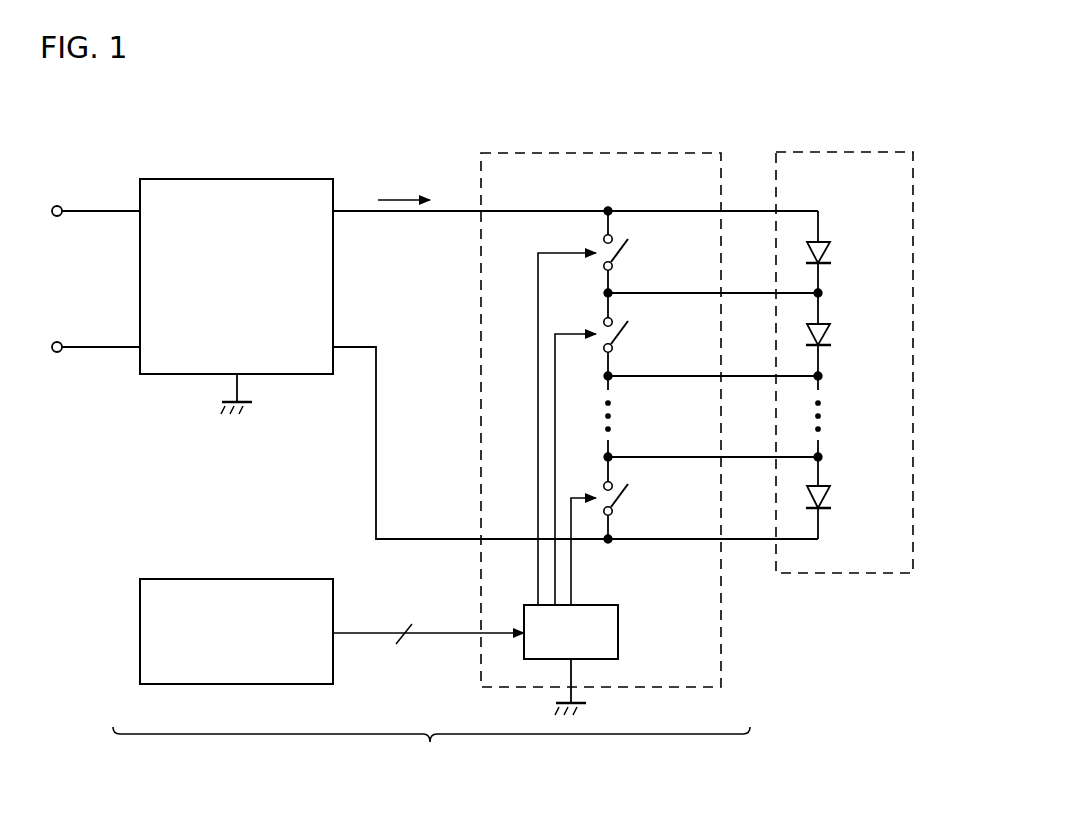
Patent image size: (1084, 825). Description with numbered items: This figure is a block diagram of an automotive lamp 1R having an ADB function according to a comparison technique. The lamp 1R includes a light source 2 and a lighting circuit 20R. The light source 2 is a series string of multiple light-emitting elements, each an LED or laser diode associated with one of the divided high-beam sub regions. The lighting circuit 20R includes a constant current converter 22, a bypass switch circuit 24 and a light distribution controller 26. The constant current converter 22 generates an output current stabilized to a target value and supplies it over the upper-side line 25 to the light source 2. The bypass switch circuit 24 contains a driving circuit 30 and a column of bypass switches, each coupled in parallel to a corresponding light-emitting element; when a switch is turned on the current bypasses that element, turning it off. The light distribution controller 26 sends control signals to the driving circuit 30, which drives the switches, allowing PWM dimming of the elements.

The automotive lamp 1R is at (853, 131).
The light source 2 is at (913, 286).
The lighting circuit 20R is at (431, 755).
The constant current converter 22 is at (257, 178).
The bypass switch circuit 24 is at (646, 152).
The upper-side line 25 is at (549, 209).
The light distribution controller 26 is at (256, 578).
The driving circuit 30 is at (592, 604).